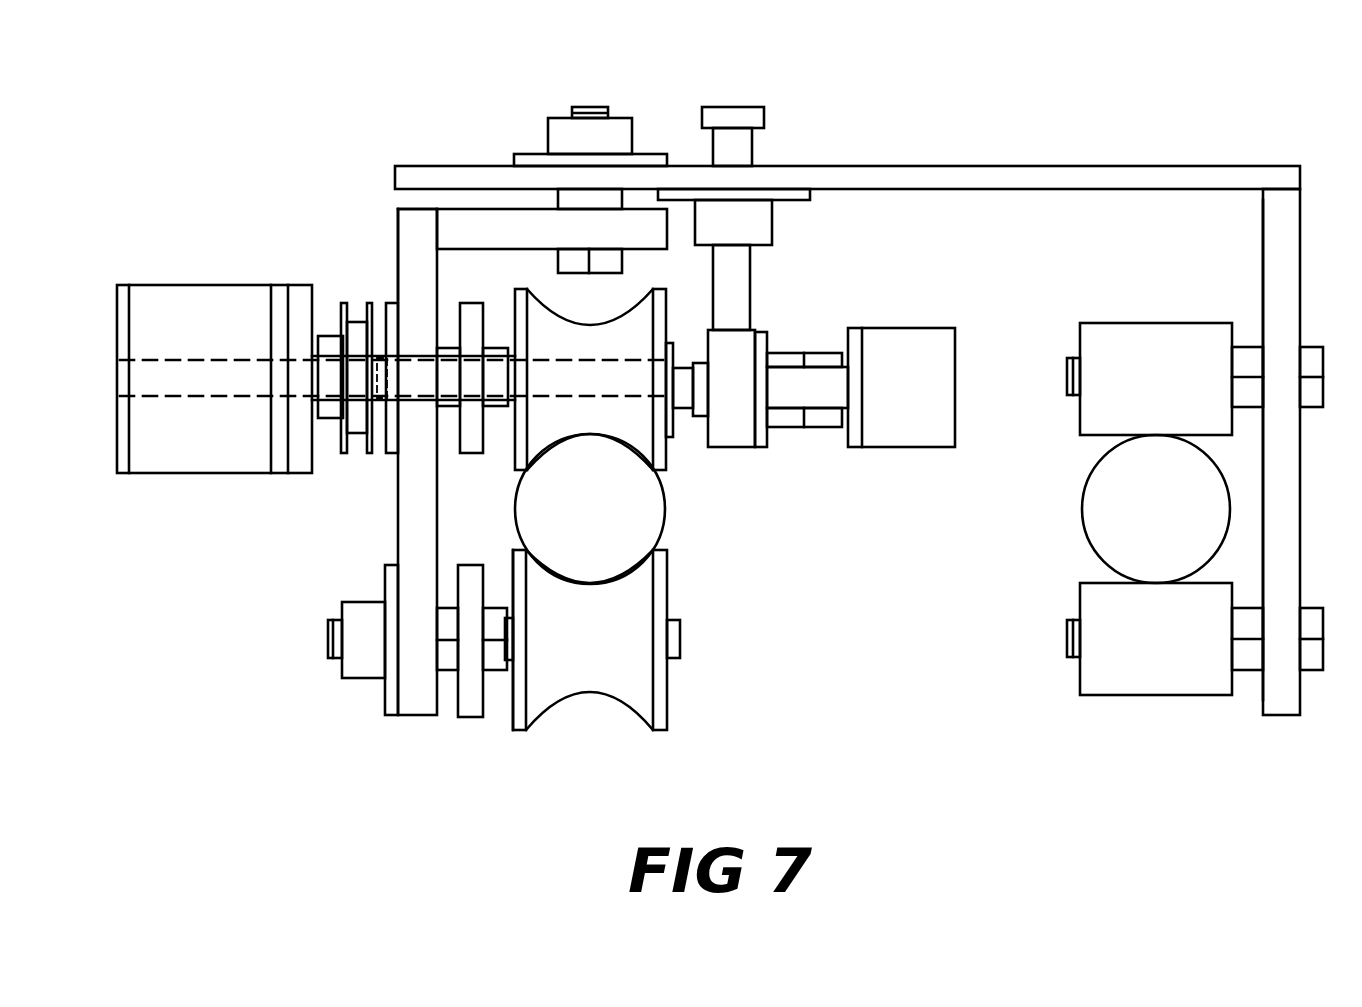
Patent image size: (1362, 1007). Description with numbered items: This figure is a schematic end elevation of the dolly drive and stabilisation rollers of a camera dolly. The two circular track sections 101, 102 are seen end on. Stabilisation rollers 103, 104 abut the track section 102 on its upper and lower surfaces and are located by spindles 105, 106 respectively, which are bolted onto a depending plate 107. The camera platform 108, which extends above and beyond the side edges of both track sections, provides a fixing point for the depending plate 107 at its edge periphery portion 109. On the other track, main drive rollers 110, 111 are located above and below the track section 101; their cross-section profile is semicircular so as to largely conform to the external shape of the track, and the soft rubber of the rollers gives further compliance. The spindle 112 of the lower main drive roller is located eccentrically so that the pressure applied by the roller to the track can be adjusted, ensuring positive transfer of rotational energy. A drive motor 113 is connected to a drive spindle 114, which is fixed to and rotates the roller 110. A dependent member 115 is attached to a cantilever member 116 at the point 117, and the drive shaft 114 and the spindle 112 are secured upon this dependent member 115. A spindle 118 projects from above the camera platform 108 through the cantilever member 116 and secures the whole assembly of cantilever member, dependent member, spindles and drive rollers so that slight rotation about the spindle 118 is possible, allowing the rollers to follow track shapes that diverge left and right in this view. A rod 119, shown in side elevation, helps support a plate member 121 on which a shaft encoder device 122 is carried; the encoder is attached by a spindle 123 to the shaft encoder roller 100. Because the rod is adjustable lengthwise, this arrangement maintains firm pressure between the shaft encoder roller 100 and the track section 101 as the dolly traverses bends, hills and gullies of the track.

The shaft encoder roller 100 is at (677, 432).
The circular track section 101 is at (599, 516).
The circular track section 102 is at (1168, 512).
The stabilisation roller 103 is at (1113, 325).
The stabilisation roller 104 is at (1088, 680).
The spindle 105 is at (1066, 368).
The spindle 106 is at (1066, 640).
The depending plate 107 is at (1279, 287).
The camera platform 108 is at (970, 178).
The edge periphery portion 109 is at (1274, 188).
The main drive roller 110 is at (516, 462).
The main drive roller 111 is at (525, 575).
The spindle 112 is at (684, 648).
The drive motor 113 is at (160, 460).
The drive spindle 114 is at (416, 376).
The dependent member 115 is at (412, 505).
The cantilever member 116 is at (474, 228).
The attachment point 117 is at (436, 230).
The spindle 118 is at (592, 108).
The rod 119 is at (742, 158).
The plate member 121 is at (764, 340).
The shaft encoder device 122 is at (915, 340).
The spindle 123 is at (686, 377).